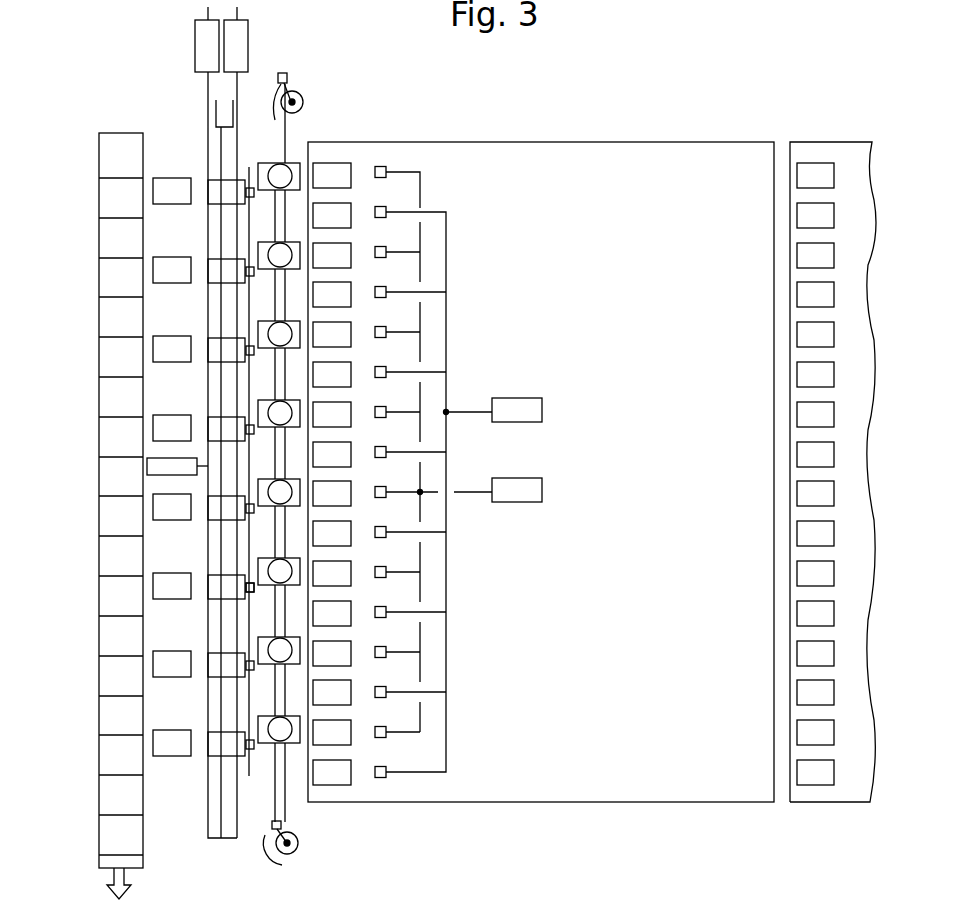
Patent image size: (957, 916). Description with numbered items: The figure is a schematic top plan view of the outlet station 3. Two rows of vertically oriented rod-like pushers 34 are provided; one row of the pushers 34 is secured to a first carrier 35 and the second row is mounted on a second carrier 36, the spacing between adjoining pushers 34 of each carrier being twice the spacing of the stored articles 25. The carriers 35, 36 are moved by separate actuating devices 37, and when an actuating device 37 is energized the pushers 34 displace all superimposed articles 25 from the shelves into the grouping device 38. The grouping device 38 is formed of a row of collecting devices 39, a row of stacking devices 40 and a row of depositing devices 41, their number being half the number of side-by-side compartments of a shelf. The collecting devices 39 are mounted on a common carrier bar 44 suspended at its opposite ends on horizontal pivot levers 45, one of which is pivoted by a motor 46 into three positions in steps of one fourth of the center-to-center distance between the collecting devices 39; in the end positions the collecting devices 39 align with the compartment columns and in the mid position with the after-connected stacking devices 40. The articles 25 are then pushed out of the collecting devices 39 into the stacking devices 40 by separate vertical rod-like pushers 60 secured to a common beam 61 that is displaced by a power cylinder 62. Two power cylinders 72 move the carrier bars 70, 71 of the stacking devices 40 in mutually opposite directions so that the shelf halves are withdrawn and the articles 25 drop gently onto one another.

The outlet station 3 is at (72, 86).
The articles 25 is at (329, 770).
The pushers 34 is at (387, 253).
The first carrier 35 is at (424, 189).
The second carrier 36 is at (449, 232).
The actuating devices 37 is at (530, 410).
The grouping device 38 is at (199, 858).
The collecting devices 39 is at (260, 765).
The stacking devices 40 is at (210, 773).
The depositing devices 41 is at (163, 772).
The carrier bar 44 is at (284, 137).
The pivot lever 45 is at (289, 84).
The motor 46 is at (303, 100).
The pushers 60 is at (246, 586).
The beam 61 is at (250, 540).
The power cylinder 62 is at (162, 467).
The carrier bar 70 is at (211, 152).
The carrier bar 71 is at (230, 153).
The power cylinders 72 is at (237, 42).